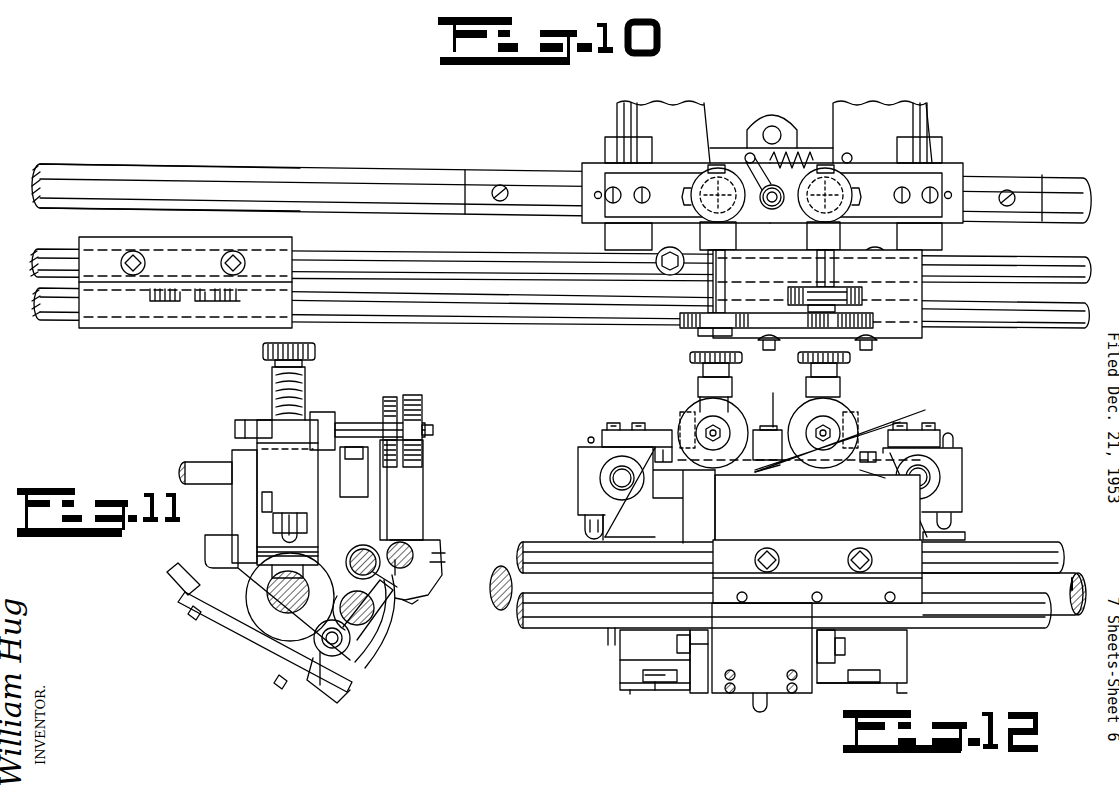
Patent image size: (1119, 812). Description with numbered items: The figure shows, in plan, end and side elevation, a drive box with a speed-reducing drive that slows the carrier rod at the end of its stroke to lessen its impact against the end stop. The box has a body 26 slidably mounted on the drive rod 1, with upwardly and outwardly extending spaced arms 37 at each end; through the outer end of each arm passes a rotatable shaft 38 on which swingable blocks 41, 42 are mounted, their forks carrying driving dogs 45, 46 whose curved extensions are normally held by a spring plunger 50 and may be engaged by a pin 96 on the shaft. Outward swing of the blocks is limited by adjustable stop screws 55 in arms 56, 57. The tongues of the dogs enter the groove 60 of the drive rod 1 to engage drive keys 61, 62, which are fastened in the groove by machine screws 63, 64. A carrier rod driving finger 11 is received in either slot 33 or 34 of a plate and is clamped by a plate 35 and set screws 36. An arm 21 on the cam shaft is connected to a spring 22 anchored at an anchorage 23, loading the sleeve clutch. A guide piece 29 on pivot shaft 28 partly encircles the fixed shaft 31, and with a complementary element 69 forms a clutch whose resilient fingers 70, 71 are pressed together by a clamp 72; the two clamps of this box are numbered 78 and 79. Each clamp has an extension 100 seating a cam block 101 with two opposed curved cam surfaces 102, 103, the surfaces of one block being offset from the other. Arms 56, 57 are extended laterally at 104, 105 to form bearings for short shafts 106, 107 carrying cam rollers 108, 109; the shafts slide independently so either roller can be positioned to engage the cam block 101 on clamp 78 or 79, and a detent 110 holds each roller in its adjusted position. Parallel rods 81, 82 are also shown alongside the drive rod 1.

In FIG. 10, the drive rod 1 is at (298, 181).
In FIG. 11, the drive rod 1 is at (267, 591).
In FIG. 12, the drive rod 1 is at (503, 609).
In FIG. 11, the carrier rod driving finger 11 is at (178, 580).
In FIG. 12, the carrier rod driving finger 11 is at (665, 686).
In FIG. 10, the arm 21 is at (749, 154).
In FIG. 12, the arm 21 is at (774, 397).
In FIG. 10, the spring 22 is at (790, 147).
In FIG. 10, the anchorage 23 is at (850, 155).
In FIG. 11, the body 26 is at (275, 622).
In FIG. 12, the body 26 is at (622, 650).
In FIG. 11, the pivot shaft 28 is at (345, 662).
In FIG. 12, the pivot shaft 28 is at (677, 644).
In FIG. 11, the guide piece 29 is at (336, 596).
In FIG. 11, the fixed shaft 31 is at (375, 630).
In FIG. 12, the fixed shaft 31 is at (555, 628).
In FIG. 12, the slot 33 is at (643, 676).
In FIG. 12, the slot 34 is at (850, 683).
In FIG. 11, the plate 35 is at (240, 632).
In FIG. 12, the plate 35 is at (632, 692).
In FIG. 11, the set screws 36 is at (194, 617).
In FIG. 10, the arms 37 is at (606, 148).
In FIG. 11, the arms 37 is at (235, 458).
In FIG. 10, the rotatable shaft 38 is at (617, 114).
In FIG. 11, the rotatable shaft 38 is at (190, 463).
In FIG. 12, the rotatable shaft 38 is at (612, 475).
In FIG. 10, the swingable block 41 is at (582, 190).
In FIG. 11, the swingable block 41 is at (265, 460).
In FIG. 12, the swingable block 41 is at (580, 447).
In FIG. 10, the swingable block 42 is at (960, 170).
In FIG. 12, the swingable block 42 is at (962, 462).
In FIG. 11, the driving dog 45 is at (318, 545).
In FIG. 12, the driving dog 45 is at (598, 538).
In FIG. 12, the driving dog 46 is at (965, 536).
In FIG. 11, the spring plunger 50 is at (288, 520).
In FIG. 12, the spring plunger 50 is at (590, 516).
In FIG. 10, the adjustable stop screws 55 is at (707, 183).
In FIG. 12, the adjustable stop screws 55 is at (690, 424).
In FIG. 10, the arm 56 is at (668, 178).
In FIG. 12, the arm 56 is at (660, 430).
In FIG. 10, the arm 57 is at (898, 186).
In FIG. 12, the arm 57 is at (889, 430).
In FIG. 10, the groove 60 is at (383, 185).
In FIG. 12, the groove 60 is at (505, 552).
In FIG. 10, the drive key 61 is at (533, 186).
In FIG. 10, the drive key 62 is at (1003, 190).
In FIG. 10, the machine screw 63 is at (497, 186).
In FIG. 10, the machine screw 64 is at (1014, 193).
In FIG. 11, the complementary element 69 is at (388, 632).
In FIG. 12, the complementary element 69 is at (698, 660).
In FIG. 11, the resilient finger 70 is at (388, 602).
In FIG. 11, the resilient finger 71 is at (395, 615).
In FIG. 12, the resilient finger 71 is at (750, 680).
In FIG. 11, the clamp 72 is at (408, 540).
In FIG. 12, the clamp 72 is at (817, 571).
In FIG. 10, the clamp 78 is at (292, 263).
In FIG. 10, the clamp 79 is at (925, 312).
In FIG. 11, the clamp 79 is at (425, 580).
In FIG. 12, the clamp 79 is at (787, 600).
In FIG. 10, the rod 81 is at (467, 318).
In FIG. 11, the rod 81 is at (412, 547).
In FIG. 12, the rod 81 is at (548, 542).
In FIG. 10, the rod 82 is at (447, 257).
In FIG. 11, the rod 82 is at (364, 548).
In FIG. 12, the rod 82 is at (522, 542).
In FIG. 11, the pin 96 is at (262, 503).
In FIG. 11, the extension 100 is at (423, 493).
In FIG. 12, the extension 100 is at (730, 517).
In FIG. 12, the cam block 101 is at (948, 433).
In FIG. 10, the cam surface 102 is at (135, 292).
In FIG. 12, the cam surface 102 is at (797, 468).
In FIG. 10, the cam surface 103 is at (240, 292).
In FIG. 12, the cam surface 103 is at (863, 472).
In FIG. 10, the lateral extension 104 is at (736, 240).
In FIG. 11, the lateral extension 104 is at (320, 412).
In FIG. 12, the lateral extension 104 is at (730, 432).
In FIG. 10, the lateral extension 105 is at (807, 240).
In FIG. 12, the lateral extension 105 is at (783, 430).
In FIG. 10, the short shaft 106 is at (725, 272).
In FIG. 11, the short shaft 106 is at (390, 420).
In FIG. 10, the short shaft 107 is at (817, 272).
In FIG. 11, the short shaft 107 is at (250, 420).
In FIG. 10, the cam roller 108 is at (688, 322).
In FIG. 11, the cam roller 108 is at (425, 401).
In FIG. 12, the cam roller 108 is at (697, 415).
In FIG. 10, the cam roller 109 is at (862, 297).
In FIG. 11, the cam roller 109 is at (413, 395).
In FIG. 12, the cam roller 109 is at (845, 420).
In FIG. 11, the detent 110 is at (315, 353).
In FIG. 12, the detent 110 is at (690, 359).